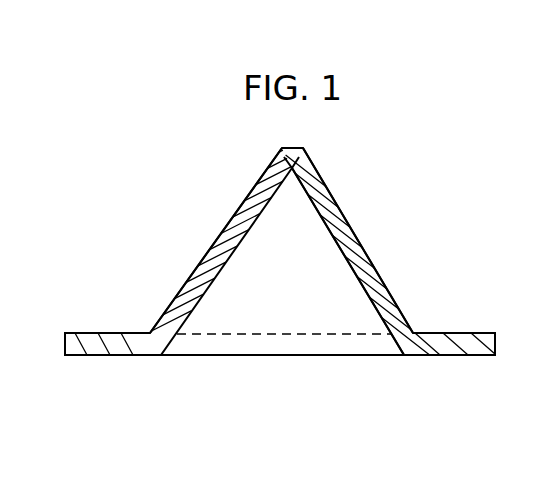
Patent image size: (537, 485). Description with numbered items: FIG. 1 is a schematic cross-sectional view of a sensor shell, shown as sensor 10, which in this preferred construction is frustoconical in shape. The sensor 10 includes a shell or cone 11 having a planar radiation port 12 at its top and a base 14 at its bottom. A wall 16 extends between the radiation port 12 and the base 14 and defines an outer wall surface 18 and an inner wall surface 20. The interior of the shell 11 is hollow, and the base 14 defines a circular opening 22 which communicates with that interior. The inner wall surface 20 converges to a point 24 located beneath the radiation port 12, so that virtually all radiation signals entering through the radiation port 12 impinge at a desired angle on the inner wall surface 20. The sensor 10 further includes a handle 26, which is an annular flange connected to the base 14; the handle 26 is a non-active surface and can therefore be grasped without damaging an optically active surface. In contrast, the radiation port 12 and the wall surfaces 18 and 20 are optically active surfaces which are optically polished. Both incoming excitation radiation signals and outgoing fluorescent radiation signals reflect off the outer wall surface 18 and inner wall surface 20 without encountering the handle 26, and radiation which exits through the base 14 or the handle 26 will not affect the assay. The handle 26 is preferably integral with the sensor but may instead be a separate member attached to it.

The sensor 10 is at (406, 174).
The shell or cone 11 is at (211, 236).
The radiation port 12 is at (298, 148).
The base 14 is at (304, 356).
The wall 16 is at (368, 256).
The outer wall surface 18 is at (400, 281).
The inner wall surface 20 is at (362, 315).
The circular opening 22 is at (237, 380).
The point 24 is at (288, 193).
The handle 26 is at (458, 356).